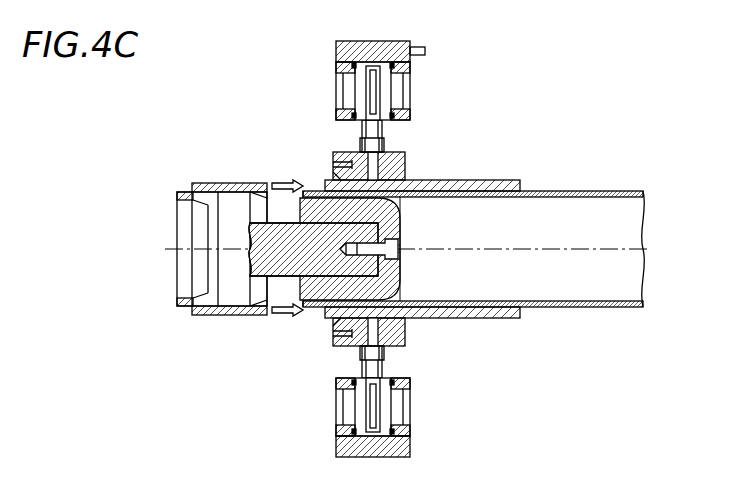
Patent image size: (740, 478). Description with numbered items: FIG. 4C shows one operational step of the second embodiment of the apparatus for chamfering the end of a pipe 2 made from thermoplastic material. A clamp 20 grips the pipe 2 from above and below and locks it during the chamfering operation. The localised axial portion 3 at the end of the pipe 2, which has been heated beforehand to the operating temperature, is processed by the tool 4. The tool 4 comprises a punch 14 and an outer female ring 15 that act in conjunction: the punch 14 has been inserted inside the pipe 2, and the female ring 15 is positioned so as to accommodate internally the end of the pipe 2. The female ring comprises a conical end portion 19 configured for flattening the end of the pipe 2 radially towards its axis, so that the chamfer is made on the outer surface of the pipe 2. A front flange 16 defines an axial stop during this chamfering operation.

The pipe 2 is at (600, 188).
The localised axial portion 3 is at (320, 308).
The tool 4 is at (292, 285).
The punch 14 is at (408, 272).
The outer female ring 15 is at (238, 317).
The front flange 16 is at (178, 195).
The conical end portion 19 is at (258, 198).
The clamp 20 is at (410, 167).